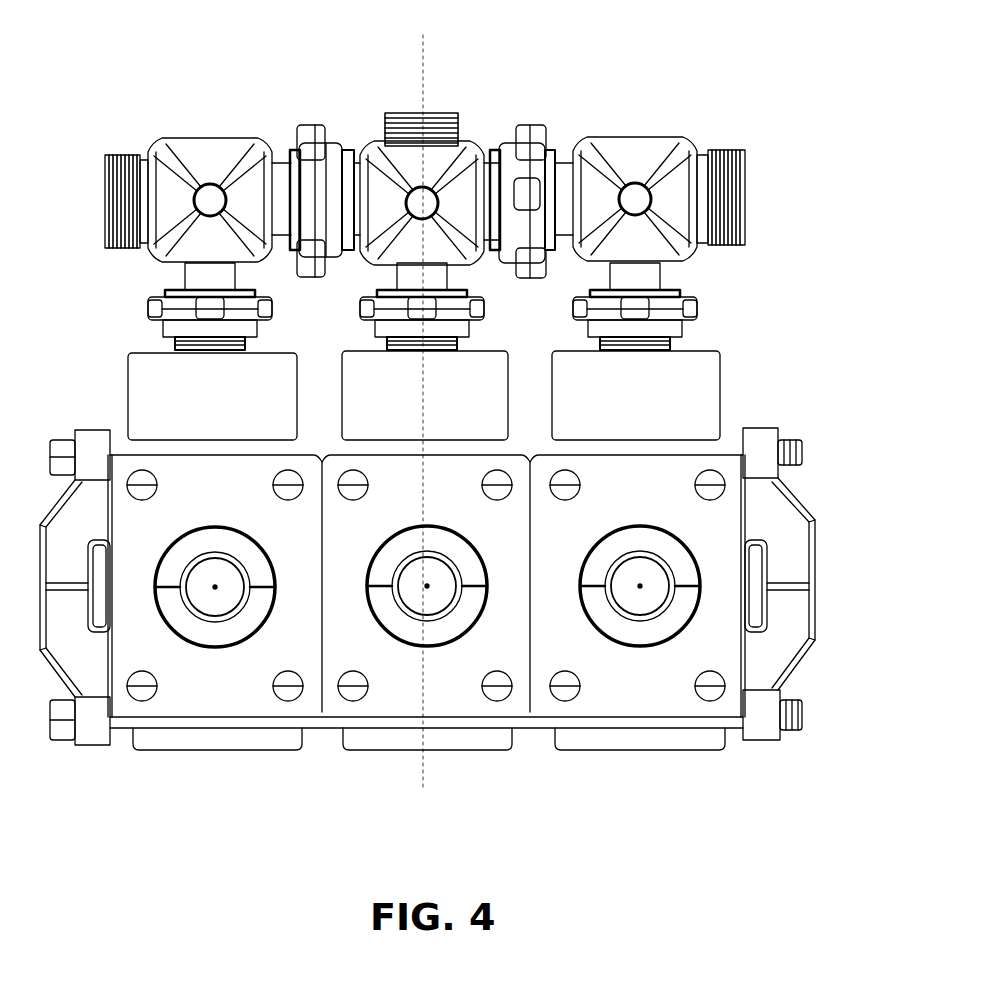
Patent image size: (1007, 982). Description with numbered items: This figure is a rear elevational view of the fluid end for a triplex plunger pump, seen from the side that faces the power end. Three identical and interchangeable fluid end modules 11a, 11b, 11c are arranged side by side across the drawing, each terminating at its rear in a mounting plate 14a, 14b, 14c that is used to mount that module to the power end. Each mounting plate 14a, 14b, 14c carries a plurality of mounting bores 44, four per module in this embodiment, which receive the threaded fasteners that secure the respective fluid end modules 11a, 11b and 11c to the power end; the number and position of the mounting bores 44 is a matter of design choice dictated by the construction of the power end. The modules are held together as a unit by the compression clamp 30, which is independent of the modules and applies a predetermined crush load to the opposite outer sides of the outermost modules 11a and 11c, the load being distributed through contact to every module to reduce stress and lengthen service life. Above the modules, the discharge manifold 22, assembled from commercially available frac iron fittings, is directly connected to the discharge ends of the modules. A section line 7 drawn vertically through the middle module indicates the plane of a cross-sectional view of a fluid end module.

The section line 7 is at (457, 28).
The discharge manifold 22 is at (606, 136).
The compression clamp 30 is at (818, 549).
The fluid end module 11a is at (237, 408).
The fluid end module 11b is at (422, 408).
The fluid end module 11c is at (658, 408).
The mounting plate 14a is at (240, 503).
The mounting plate 14b is at (425, 503).
The mounting plate 14c is at (658, 503).
The mounting bores 44 is at (137, 471).